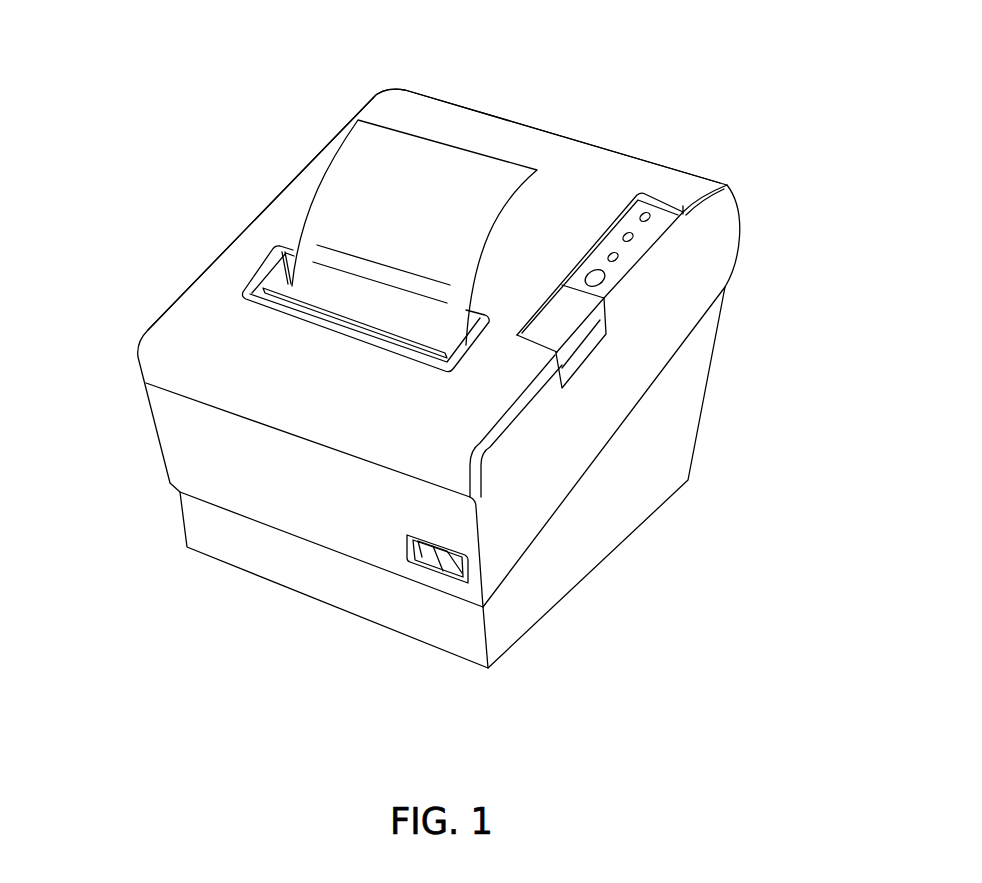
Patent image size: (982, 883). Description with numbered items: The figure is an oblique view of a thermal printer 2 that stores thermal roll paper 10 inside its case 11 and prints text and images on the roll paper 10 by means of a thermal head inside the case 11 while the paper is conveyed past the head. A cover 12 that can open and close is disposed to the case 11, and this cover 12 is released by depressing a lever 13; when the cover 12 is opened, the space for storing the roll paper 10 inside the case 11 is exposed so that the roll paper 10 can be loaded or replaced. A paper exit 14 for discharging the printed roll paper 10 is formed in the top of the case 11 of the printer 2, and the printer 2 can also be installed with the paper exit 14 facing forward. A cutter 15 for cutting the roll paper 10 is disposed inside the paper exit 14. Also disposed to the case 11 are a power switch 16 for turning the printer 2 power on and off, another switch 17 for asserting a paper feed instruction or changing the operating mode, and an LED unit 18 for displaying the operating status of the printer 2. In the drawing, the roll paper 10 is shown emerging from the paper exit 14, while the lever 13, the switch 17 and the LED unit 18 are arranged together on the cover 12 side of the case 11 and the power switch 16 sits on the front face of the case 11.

The printer 2 is at (506, 37).
The roll paper 10 is at (340, 157).
The case 11 is at (721, 259).
The cover 12 is at (585, 163).
The lever 13 is at (567, 327).
The paper exit 14 is at (273, 248).
The cutter 15 is at (283, 298).
The power switch 16 is at (433, 565).
The switch 17 is at (606, 280).
The LED unit 18 is at (657, 207).